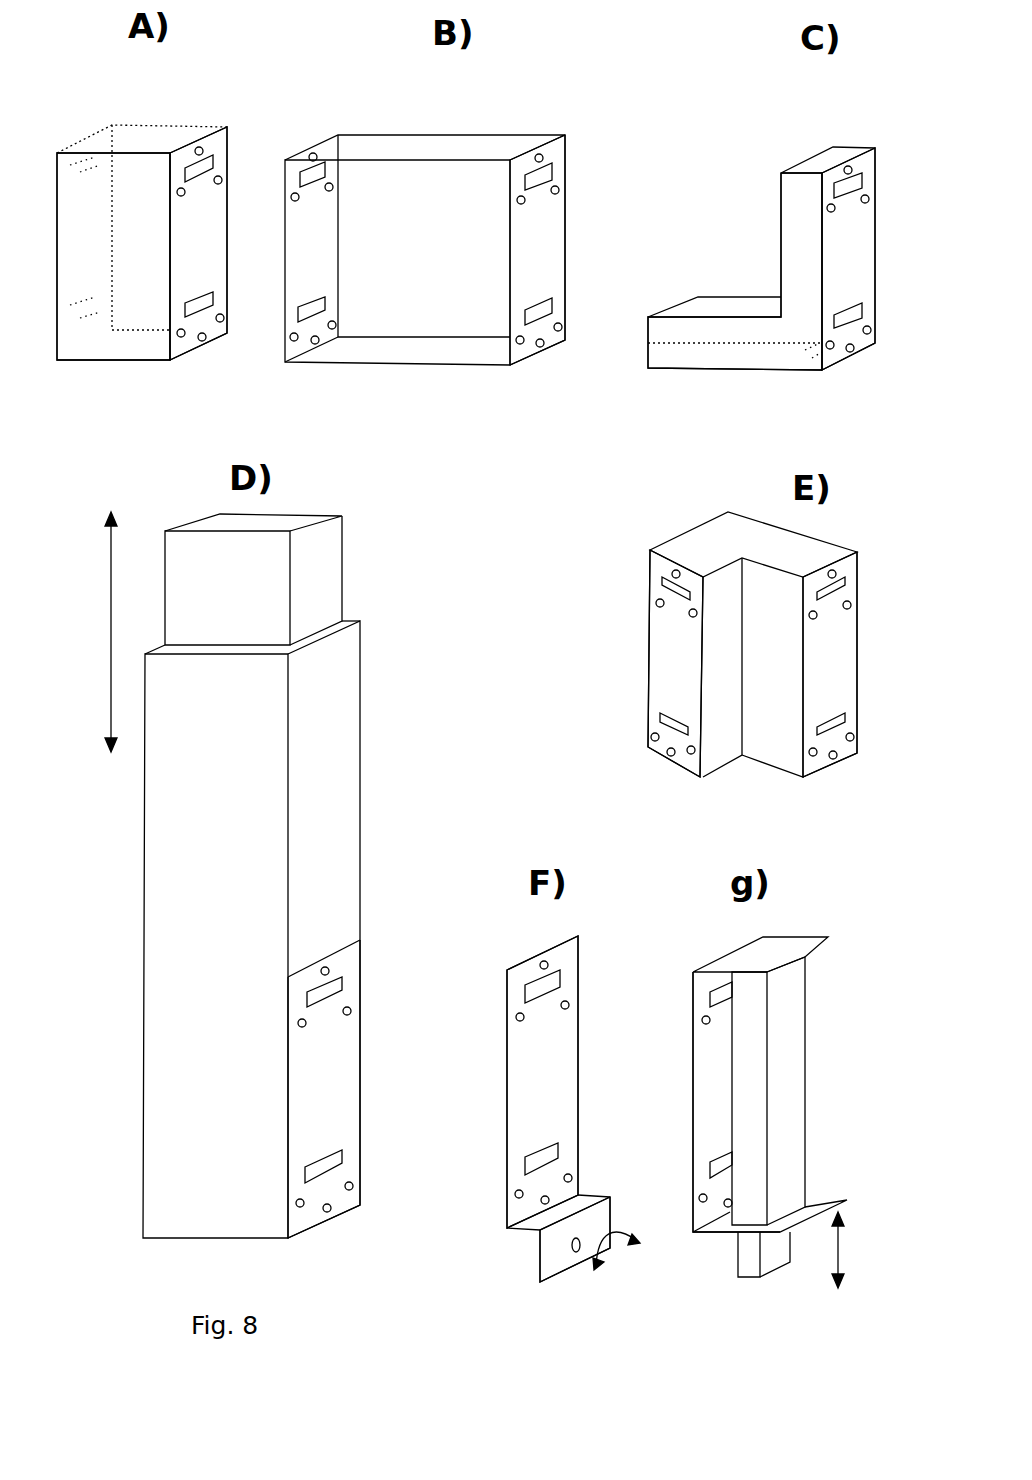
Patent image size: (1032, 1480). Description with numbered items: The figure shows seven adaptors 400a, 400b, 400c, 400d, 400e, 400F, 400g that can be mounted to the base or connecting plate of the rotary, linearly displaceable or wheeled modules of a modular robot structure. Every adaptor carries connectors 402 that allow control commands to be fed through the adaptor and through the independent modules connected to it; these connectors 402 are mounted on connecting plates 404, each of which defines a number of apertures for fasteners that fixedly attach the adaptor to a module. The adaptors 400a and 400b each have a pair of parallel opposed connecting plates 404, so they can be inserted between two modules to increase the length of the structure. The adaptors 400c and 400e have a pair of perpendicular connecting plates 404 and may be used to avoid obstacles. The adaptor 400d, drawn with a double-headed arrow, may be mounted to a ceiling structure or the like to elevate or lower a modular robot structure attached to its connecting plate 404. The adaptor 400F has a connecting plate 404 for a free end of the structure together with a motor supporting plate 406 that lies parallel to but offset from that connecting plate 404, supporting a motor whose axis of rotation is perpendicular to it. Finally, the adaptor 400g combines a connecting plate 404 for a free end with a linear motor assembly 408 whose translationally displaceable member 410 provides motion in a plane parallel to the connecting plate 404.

In FIG. 8a, the adaptor 400a is at (177, 97).
In FIG. 8b, the adaptor 400b is at (489, 119).
In FIG. 8c, the adaptor 400c is at (754, 175).
In FIG. 8d, the adaptor 400d is at (375, 748).
In FIG. 8e, the adaptor 400e is at (598, 568).
In FIG. 8f, the adaptor 400F is at (495, 1061).
In FIG. 8g, the adaptor 400g is at (887, 1013).
In FIG. 8a, the connectors 402 is at (213, 170).
In FIG. 8b, the connectors 402 is at (310, 157).
In FIG. 8c, the connectors 402 is at (850, 190).
In FIG. 8d, the connectors 402 is at (340, 990).
In FIG. 8e, the connectors 402 is at (653, 722).
In FIG. 8f, the connectors 402 is at (532, 987).
In FIG. 8g, the connectors 402 is at (717, 995).
In FIG. 8a, the connecting plates 404 is at (80, 143).
In FIG. 8b, the connecting plates 404 is at (537, 248).
In FIG. 8c, the connecting plates 404 is at (838, 255).
In FIG. 8d, the connecting plates 404 is at (337, 1075).
In FIG. 8e, the connecting plates 404 is at (677, 650).
In FIG. 8f, the connecting plates 404 is at (548, 1080).
In FIG. 8g, the connecting plates 404 is at (712, 1080).
In FIG. 8f, the motor supporting plate 406 is at (558, 1262).
In FIG. 8g, the linear motor assembly 408 is at (802, 1128).
In FIG. 8a, the translationally displaceable member 410 is at (208, 240).
In FIG. 8c, the translationally displaceable member 410 is at (782, 373).
In FIG. 8g, the translationally displaceable member 410 is at (769, 1262).